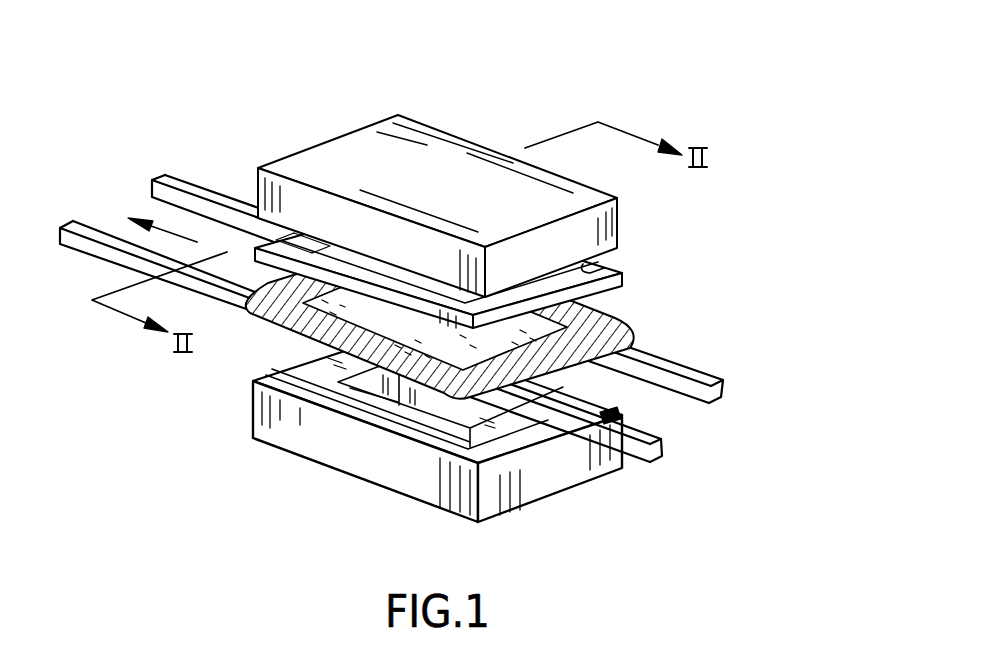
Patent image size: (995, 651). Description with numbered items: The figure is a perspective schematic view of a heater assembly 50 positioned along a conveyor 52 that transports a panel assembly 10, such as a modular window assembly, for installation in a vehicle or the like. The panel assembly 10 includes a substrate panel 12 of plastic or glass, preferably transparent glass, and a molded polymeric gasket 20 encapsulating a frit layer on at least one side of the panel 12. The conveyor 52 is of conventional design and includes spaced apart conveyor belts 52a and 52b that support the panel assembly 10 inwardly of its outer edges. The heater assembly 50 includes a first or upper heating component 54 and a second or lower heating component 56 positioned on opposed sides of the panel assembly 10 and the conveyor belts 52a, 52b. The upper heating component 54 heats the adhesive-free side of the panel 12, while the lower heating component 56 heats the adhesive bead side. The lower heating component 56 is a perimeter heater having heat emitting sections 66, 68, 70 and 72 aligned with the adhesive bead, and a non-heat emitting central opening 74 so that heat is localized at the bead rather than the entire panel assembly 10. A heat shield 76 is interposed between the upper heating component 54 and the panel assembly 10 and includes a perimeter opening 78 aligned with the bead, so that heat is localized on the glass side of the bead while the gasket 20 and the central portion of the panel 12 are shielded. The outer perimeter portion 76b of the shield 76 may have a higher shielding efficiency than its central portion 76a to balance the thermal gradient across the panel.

The heater assembly 50 is at (469, 289).
The first or upper heating component 54 is at (658, 210).
The perimeter opening 78 is at (590, 262).
The heat shield 76 is at (546, 185).
The central portion of the shield 76a is at (330, 250).
The outer perimeter portion of the shield 76b is at (284, 242).
The polymeric gasket 20 is at (602, 330).
The panel assembly 10 is at (484, 408).
The substrate panel 12 is at (493, 344).
The heat emitting section 72 is at (275, 357).
The conveyor 52 is at (459, 350).
The conveyor belt 52a is at (665, 438).
The conveyor belt 52b is at (668, 355).
The heat emitting section 70 is at (625, 408).
The second or lower heating component 56 is at (416, 455).
The non-heat emitting central portion or opening 74 is at (372, 383).
The heat emitting section 66 is at (391, 413).
The heat emitting section 68 is at (535, 467).